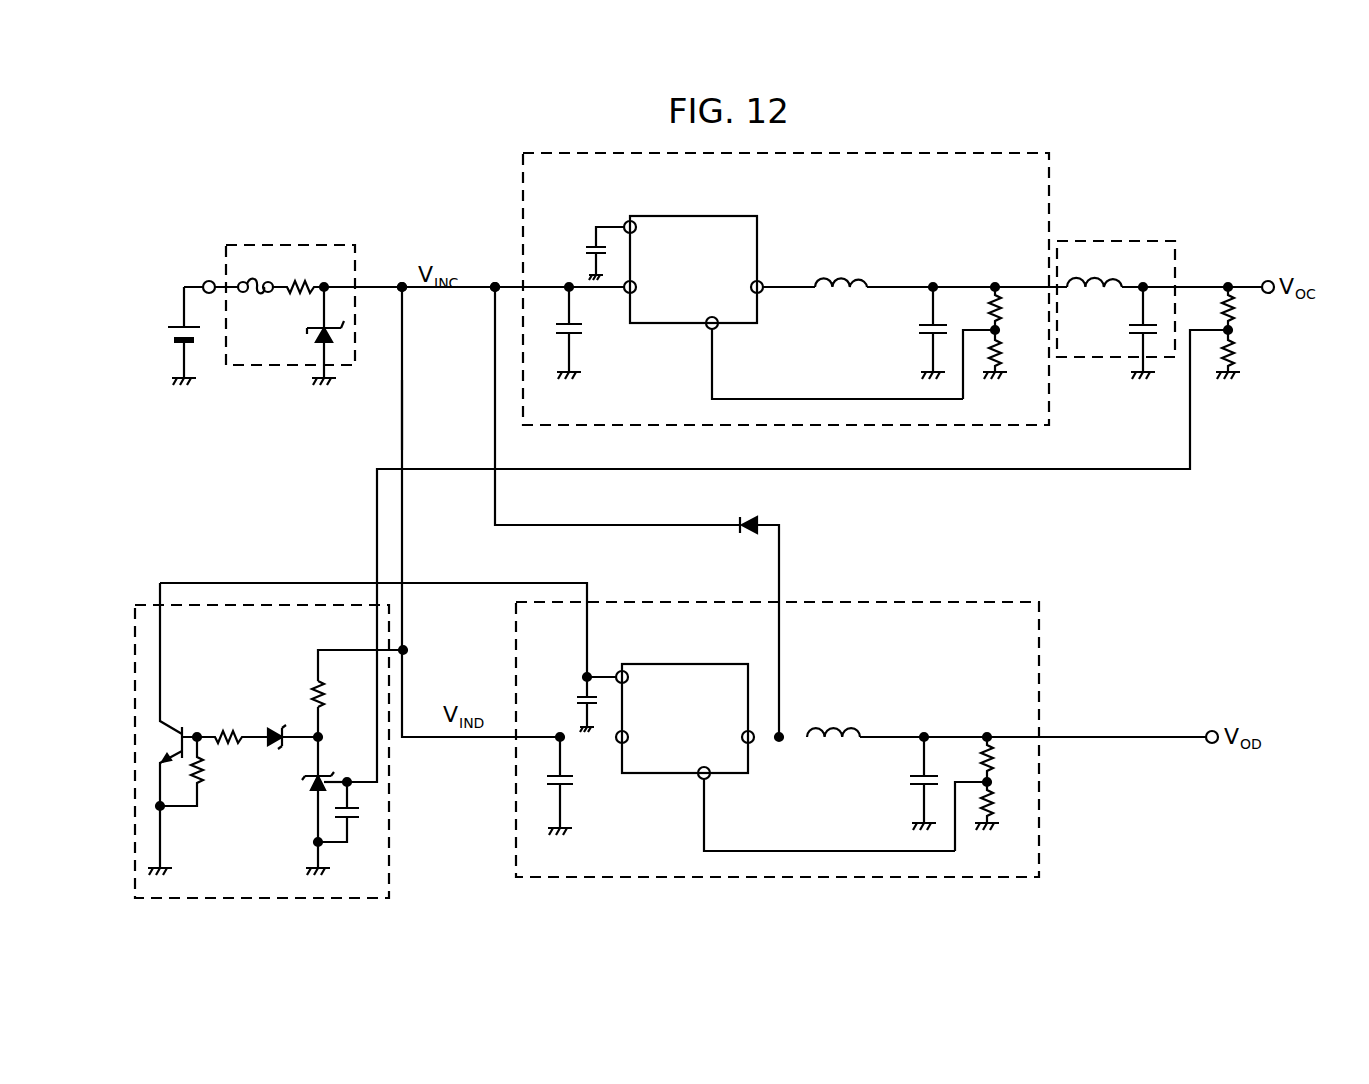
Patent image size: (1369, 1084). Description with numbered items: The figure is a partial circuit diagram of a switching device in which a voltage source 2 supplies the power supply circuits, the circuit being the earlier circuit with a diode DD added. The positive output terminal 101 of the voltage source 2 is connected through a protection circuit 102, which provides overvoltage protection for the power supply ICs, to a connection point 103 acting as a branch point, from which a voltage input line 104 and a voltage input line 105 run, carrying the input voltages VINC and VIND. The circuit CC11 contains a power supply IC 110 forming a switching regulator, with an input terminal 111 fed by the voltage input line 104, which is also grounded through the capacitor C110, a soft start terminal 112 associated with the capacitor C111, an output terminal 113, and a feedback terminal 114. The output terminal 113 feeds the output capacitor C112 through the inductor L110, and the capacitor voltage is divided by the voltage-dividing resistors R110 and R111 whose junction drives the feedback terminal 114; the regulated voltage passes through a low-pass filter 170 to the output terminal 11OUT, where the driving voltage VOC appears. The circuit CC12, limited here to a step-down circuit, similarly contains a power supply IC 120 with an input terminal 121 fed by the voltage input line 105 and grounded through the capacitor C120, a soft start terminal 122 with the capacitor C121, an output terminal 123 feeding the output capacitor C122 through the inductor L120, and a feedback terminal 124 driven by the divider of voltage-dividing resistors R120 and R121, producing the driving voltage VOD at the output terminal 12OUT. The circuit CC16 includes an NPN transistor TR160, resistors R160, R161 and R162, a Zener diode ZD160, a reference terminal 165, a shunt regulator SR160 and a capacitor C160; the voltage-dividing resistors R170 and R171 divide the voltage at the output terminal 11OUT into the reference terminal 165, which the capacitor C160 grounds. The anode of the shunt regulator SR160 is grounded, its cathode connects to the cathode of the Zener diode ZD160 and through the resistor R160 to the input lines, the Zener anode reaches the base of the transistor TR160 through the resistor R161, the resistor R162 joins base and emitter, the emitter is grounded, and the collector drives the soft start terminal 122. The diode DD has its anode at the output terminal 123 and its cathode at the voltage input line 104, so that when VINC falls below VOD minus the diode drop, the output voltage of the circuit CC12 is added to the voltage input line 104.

The voltage source 2 is at (202, 330).
The positive output terminal 101 is at (207, 281).
The protection circuit 102 is at (336, 246).
The connection point 103 is at (402, 282).
The voltage input line 104 is at (493, 283).
The voltage input line 105 is at (401, 412).
The power supply IC 110 is at (736, 216).
The input terminal 111 is at (628, 294).
The soft start terminal 112 is at (628, 221).
The output terminal 113 is at (763, 281).
The feedback terminal 114 is at (716, 329).
The power supply IC 120 is at (733, 664).
The input terminal 121 is at (620, 745).
The soft start terminal 122 is at (621, 671).
The output terminal 123 is at (752, 745).
The feedback terminal 124 is at (702, 781).
The reference terminal 165 is at (333, 776).
The low-pass filter 170 is at (1163, 241).
The output terminal 11OUT is at (1267, 280).
The output terminal 12OUT is at (1212, 730).
The capacitor C110 is at (585, 338).
The capacitor C111 is at (585, 250).
The output capacitor C112 is at (916, 331).
The capacitor C120 is at (579, 786).
The capacitor C121 is at (576, 700).
The output capacitor C122 is at (906, 782).
The capacitor C160 is at (353, 821).
The inductor L110 is at (860, 276).
The inductor L120 is at (855, 729).
The voltage-dividing resistor R110 is at (991, 297).
The voltage-dividing resistor R111 is at (1001, 355).
The voltage-dividing resistor R120 is at (983, 746).
The voltage-dividing resistor R121 is at (996, 810).
The resistor R160 is at (308, 696).
The resistor R161 is at (229, 732).
The resistor R162 is at (205, 778).
The voltage-dividing resistor R170 is at (1236, 305).
The voltage-dividing resistor R171 is at (1236, 355).
The circuit CC11 is at (1049, 175).
The circuit CC12 is at (1010, 580).
The circuit CC16 is at (138, 604).
The transistor TR160 is at (177, 724).
The Zener diode ZD160 is at (276, 746).
The shunt regulator SR160 is at (311, 790).
The diode DD is at (757, 522).